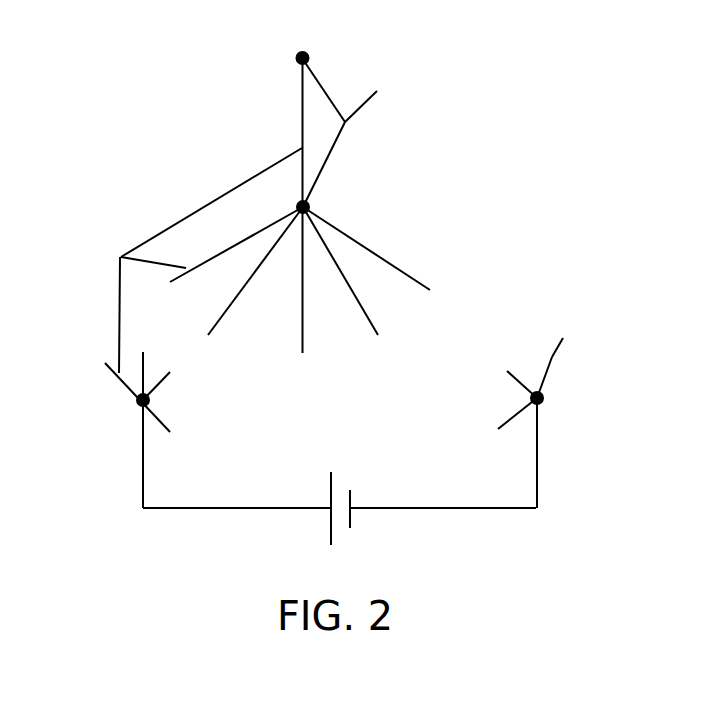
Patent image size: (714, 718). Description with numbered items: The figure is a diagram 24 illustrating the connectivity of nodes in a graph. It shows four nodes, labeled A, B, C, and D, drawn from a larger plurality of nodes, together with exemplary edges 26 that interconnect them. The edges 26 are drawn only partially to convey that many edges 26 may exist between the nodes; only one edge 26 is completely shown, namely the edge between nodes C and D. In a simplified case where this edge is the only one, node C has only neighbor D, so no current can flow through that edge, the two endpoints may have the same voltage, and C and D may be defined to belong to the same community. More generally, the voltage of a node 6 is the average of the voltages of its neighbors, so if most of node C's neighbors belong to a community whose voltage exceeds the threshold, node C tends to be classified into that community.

The diagram 24 is at (326, 290).
The node 6 is at (377, 91).
The edge 26 is at (121, 257).